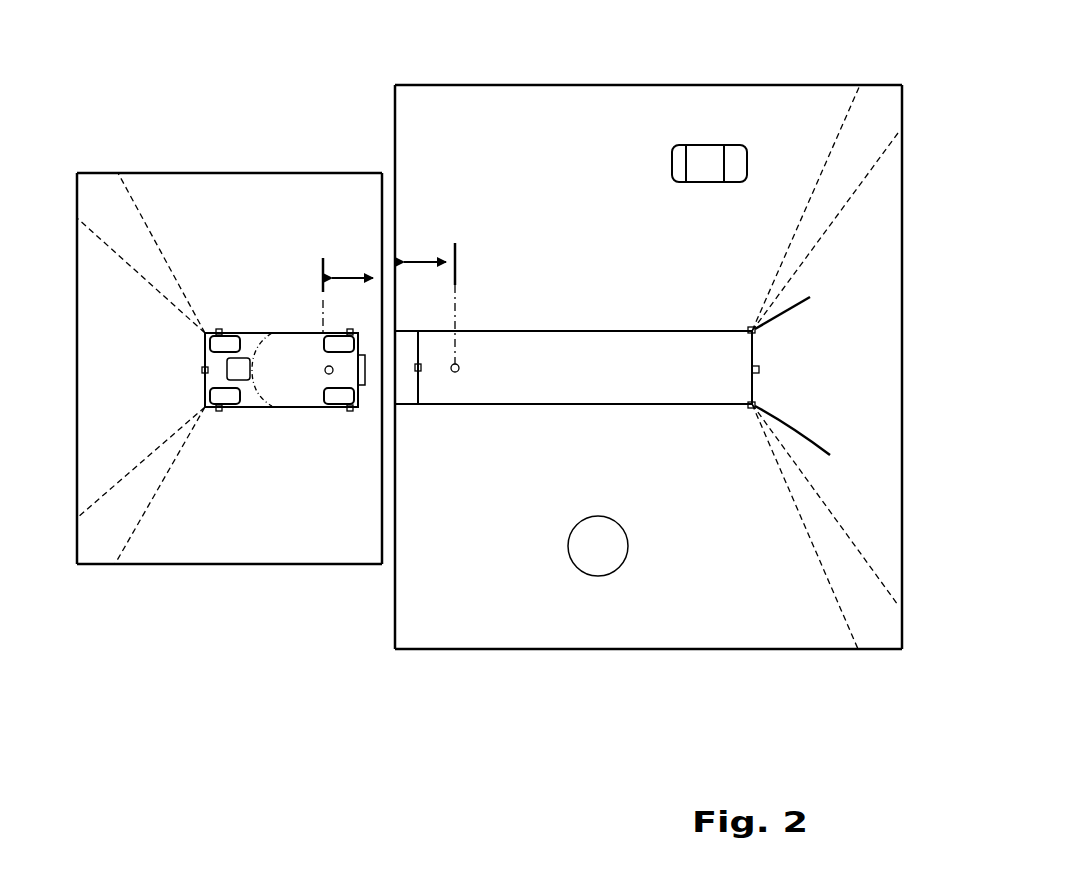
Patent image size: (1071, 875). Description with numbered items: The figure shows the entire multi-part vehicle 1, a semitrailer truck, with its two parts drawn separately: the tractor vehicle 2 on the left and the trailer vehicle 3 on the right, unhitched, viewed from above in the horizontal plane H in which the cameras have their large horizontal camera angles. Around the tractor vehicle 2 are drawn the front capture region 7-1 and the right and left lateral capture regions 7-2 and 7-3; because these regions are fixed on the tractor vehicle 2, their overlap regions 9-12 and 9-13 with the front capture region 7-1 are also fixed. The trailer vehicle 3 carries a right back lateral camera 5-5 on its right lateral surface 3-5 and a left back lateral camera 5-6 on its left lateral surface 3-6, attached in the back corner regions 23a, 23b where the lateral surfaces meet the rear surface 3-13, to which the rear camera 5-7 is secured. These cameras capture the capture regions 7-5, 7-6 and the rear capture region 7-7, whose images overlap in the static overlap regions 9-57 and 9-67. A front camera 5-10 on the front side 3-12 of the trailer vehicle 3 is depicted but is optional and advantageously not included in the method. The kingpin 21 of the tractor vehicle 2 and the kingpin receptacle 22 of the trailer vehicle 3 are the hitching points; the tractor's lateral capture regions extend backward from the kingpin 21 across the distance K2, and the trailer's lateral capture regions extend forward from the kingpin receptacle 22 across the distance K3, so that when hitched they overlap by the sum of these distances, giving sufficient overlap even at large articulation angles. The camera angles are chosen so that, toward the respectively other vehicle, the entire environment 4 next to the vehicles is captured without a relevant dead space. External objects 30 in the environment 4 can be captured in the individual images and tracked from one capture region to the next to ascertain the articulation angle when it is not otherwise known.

The entire multi-part vehicle 1 is at (138, 58).
The tractor vehicle 2 is at (283, 331).
The trailer vehicle 3 is at (626, 330).
The right lateral surface of the trailer vehicle 3-5 is at (577, 330).
The left lateral surface of the trailer vehicle 3-6 is at (545, 407).
The front side of the trailer vehicle 3-12 is at (410, 393).
The rear surface of the trailer vehicle 3-13 is at (755, 382).
The environment 4 is at (300, 172).
The right back lateral camera of the trailer vehicle 5-5 is at (750, 326).
The left back lateral camera of the trailer vehicle 5-6 is at (750, 408).
The rear camera of the trailer vehicle 5-7 is at (758, 365).
The front camera of the trailer vehicle 5-10 is at (412, 362).
The front capture region 7-1 is at (92, 376).
The capture region on the right side of the tractor vehicle 7-2 is at (213, 186).
The capture region on the left side of the tractor vehicle 7-3 is at (213, 547).
The capture region on the right side of the trailer vehicle 7-5 is at (636, 123).
The capture region on the left side of the trailer vehicle 7-6 is at (543, 625).
The rear capture region 7-7 is at (863, 378).
The overlap region 9-12 is at (92, 193).
The overlap region 9-13 is at (108, 547).
The overlap region 9-57 is at (876, 97).
The overlap region 9-67 is at (878, 637).
The kingpin 21 is at (327, 375).
The kingpin receptacle 22 is at (455, 372).
The back corner region of the trailer vehicle 23a is at (818, 301).
The back corner region of the trailer vehicle 23b is at (824, 446).
The external object 30 is at (722, 143).
The distance K2 is at (348, 281).
The distance K3 is at (429, 291).
The horizontal plane H is at (635, 738).